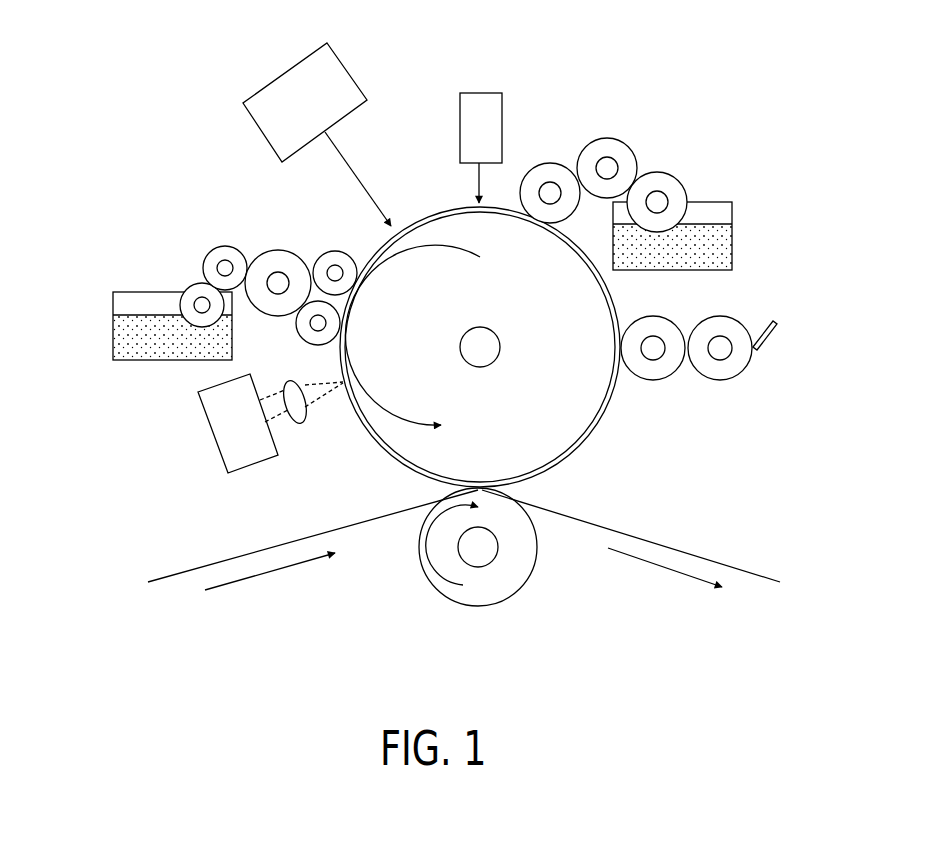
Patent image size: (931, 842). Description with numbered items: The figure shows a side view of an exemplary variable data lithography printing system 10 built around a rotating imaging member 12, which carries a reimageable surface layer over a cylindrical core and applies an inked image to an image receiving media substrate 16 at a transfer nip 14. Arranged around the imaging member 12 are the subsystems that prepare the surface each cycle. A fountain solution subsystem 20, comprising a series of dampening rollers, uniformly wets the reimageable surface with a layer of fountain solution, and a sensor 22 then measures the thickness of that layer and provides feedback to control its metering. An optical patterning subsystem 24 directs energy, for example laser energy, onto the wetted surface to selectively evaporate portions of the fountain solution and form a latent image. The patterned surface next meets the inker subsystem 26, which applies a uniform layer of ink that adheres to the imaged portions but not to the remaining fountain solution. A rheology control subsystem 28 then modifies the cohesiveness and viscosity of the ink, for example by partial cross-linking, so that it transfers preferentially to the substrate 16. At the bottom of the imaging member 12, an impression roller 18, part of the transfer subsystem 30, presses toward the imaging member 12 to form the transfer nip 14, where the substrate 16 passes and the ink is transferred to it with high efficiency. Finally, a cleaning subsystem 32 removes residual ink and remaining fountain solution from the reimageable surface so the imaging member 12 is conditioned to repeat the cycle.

The variable data lithography printing system 10 is at (172, 163).
The imaging member 12 is at (600, 415).
The transfer nip 14 is at (476, 470).
The image receiving media substrate 16 is at (245, 552).
The impression roller 18 is at (528, 575).
The fountain solution subsystem 20 is at (639, 176).
The sensor 22 is at (477, 93).
The optical patterning subsystem 24 is at (348, 73).
The inker subsystem 26 is at (206, 296).
The rheology control subsystem 28 is at (253, 426).
The transfer subsystem 30 is at (482, 638).
The cleaning subsystem 32 is at (719, 345).